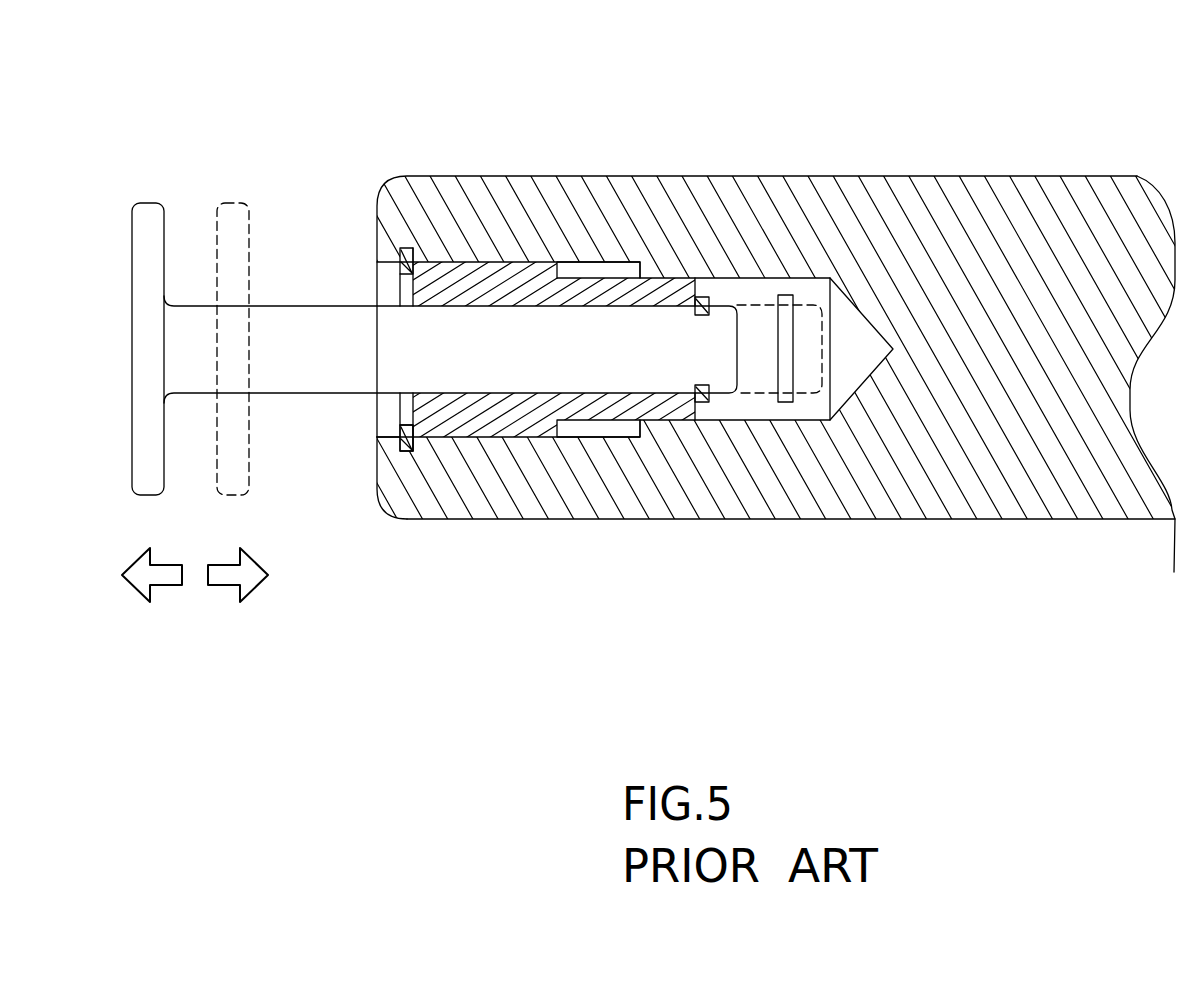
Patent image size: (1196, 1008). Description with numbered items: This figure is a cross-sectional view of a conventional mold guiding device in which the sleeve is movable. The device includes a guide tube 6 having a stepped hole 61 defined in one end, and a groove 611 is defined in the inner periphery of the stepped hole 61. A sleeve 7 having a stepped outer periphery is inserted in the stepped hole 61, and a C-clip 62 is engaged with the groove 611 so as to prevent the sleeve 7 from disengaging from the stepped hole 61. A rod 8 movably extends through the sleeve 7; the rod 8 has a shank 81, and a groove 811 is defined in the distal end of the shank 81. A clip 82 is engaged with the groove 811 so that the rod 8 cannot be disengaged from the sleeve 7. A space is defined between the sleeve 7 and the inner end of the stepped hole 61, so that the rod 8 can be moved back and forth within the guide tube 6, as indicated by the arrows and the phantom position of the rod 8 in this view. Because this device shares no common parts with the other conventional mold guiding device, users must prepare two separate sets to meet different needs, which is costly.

The guide tube 6 is at (950, 175).
The stepped hole 61 is at (745, 407).
The groove 611 is at (414, 446).
The C-clip 62 is at (405, 250).
The sleeve 7 is at (592, 276).
The rod 8 is at (288, 303).
The shank 81 is at (548, 370).
The groove 811 is at (695, 392).
The clip 82 is at (713, 299).